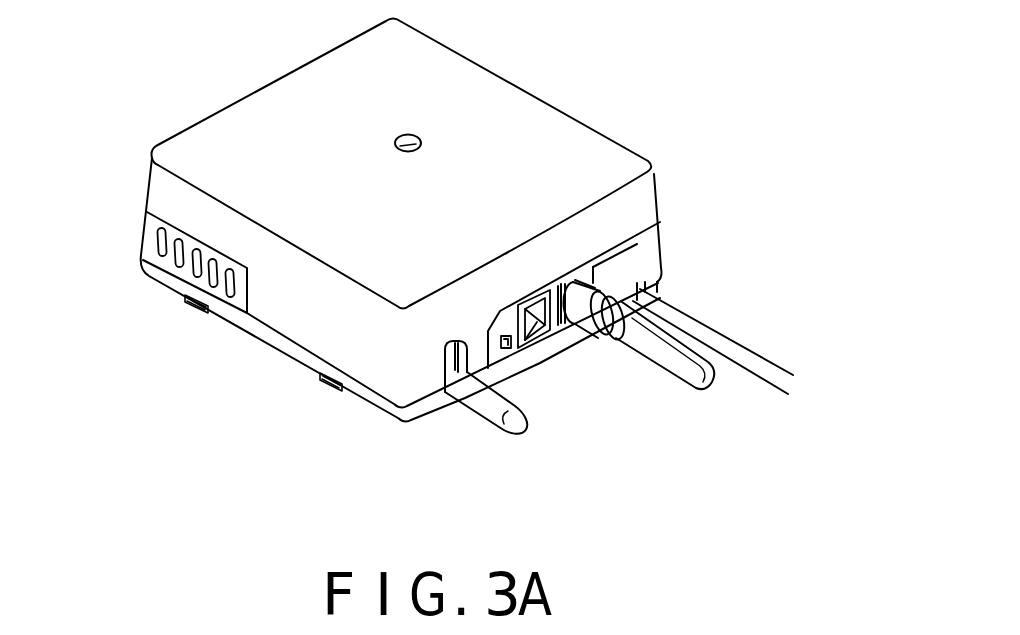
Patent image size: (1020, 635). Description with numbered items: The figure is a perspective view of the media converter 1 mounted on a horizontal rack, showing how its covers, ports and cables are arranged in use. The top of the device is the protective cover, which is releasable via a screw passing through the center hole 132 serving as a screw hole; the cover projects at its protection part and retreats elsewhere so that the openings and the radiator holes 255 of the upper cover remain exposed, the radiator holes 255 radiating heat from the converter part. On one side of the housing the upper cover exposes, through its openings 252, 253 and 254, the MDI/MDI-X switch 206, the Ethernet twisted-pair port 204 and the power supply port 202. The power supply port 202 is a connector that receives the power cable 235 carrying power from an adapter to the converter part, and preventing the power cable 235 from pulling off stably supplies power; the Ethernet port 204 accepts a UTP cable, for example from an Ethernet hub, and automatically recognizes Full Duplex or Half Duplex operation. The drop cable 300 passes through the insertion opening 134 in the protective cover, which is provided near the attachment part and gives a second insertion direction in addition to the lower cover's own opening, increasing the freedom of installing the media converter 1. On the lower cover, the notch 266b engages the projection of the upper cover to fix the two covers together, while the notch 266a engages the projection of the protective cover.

The media converter 1 is at (207, 26).
The center hole 132 is at (421, 144).
The insertion opening 134 is at (444, 362).
The power supply port 202 is at (597, 273).
The opening 254 is at (685, 276).
The 100 BASE-TX port 204 is at (568, 332).
The opening 253 is at (673, 406).
The MDI/MDI-X switch 206 is at (518, 350).
The opening 252 is at (584, 411).
The power cable 235 is at (727, 348).
The radiator holes 255 is at (181, 258).
The notch 266a is at (330, 390).
The notch 266b is at (205, 313).
The drop cable 300 is at (488, 407).